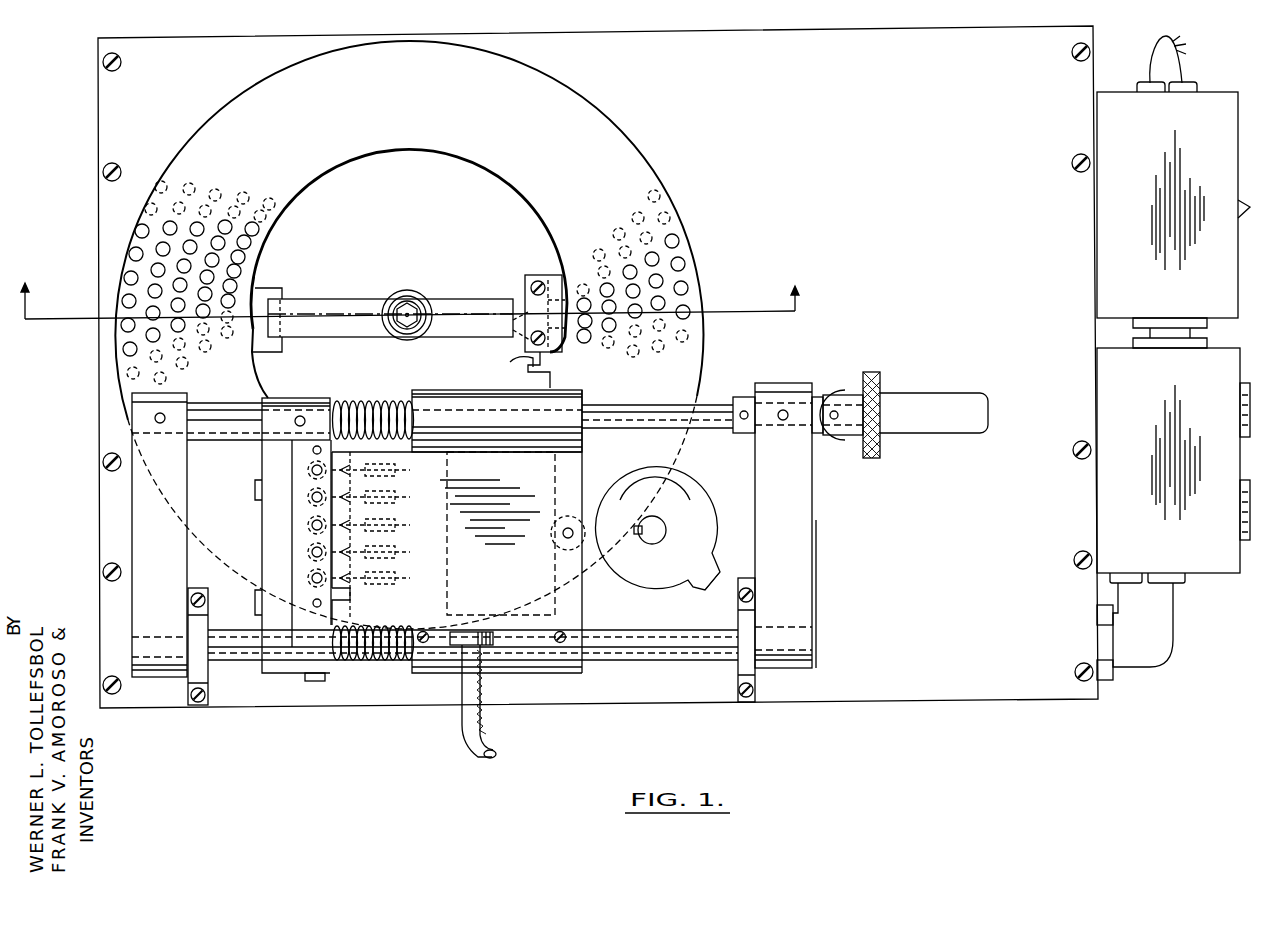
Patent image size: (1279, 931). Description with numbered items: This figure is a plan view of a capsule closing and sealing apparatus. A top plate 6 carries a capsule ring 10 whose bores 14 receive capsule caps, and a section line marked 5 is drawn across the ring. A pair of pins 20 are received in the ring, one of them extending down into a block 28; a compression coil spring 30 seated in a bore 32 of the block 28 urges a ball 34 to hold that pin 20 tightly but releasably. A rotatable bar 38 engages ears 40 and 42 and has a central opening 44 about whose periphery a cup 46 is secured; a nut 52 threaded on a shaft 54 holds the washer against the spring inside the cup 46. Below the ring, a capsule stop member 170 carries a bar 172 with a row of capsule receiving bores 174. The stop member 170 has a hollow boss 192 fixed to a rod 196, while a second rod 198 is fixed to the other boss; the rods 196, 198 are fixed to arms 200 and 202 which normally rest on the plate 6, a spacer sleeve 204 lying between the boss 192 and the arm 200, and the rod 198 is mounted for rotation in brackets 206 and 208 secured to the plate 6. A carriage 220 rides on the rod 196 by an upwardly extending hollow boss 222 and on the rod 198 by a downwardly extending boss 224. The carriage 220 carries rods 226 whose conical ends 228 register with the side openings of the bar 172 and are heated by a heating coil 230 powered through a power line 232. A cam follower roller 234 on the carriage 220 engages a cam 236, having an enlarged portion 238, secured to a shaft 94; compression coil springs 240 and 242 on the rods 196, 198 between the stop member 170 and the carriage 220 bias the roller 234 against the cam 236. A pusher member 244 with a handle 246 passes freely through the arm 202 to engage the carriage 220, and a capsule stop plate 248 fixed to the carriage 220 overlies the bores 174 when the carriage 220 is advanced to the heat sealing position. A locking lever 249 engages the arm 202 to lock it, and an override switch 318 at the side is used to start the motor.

The section line 5- 5 is at (409, 287).
The top plate 6 is at (107, 393).
The capsule ring 10 is at (636, 146).
The bores 14 is at (684, 262).
The pins 20 is at (421, 273).
The block 28 is at (526, 360).
The compression coil spring 30 is at (545, 278).
The bore 32 is at (525, 298).
The ball 34 is at (520, 325).
The rotatable bar 38 is at (334, 304).
The ear 40 is at (282, 287).
The ear 42 is at (546, 370).
The central opening 44 is at (414, 302).
The cup 46 is at (415, 330).
The nut 52 is at (400, 330).
The shaft 54 is at (405, 305).
The shaft 94 is at (667, 530).
The capsule stop member 170 is at (262, 527).
The bar 172 is at (310, 551).
The capsule receiving bores 174 is at (312, 495).
The hollow boss 192 is at (297, 400).
The rod 196 is at (628, 406).
The rod 198 is at (642, 652).
The arm 200 is at (137, 499).
The arm 202 is at (816, 528).
The spacer sleeve 204 is at (215, 403).
The bracket 206 is at (205, 628).
The bracket 208 is at (742, 626).
The carriage 220 is at (512, 569).
The hollow boss 222 is at (568, 392).
The boss 224 is at (535, 668).
The rods 226 is at (350, 606).
The conical ends 228 is at (370, 524).
The heating coil 230 is at (501, 533).
The power line 232 is at (462, 718).
The cam follower roller 234 is at (590, 490).
The cam 236 is at (692, 485).
The enlarged portion 238 is at (690, 595).
The compression coil spring 240 is at (363, 402).
The compression coil spring 242 is at (357, 664).
The pusher member 244 is at (712, 410).
The handle 246 is at (882, 376).
The capsule stop plate 248 is at (312, 577).
The locking lever 249 is at (943, 394).
The override switch 318 is at (1246, 386).